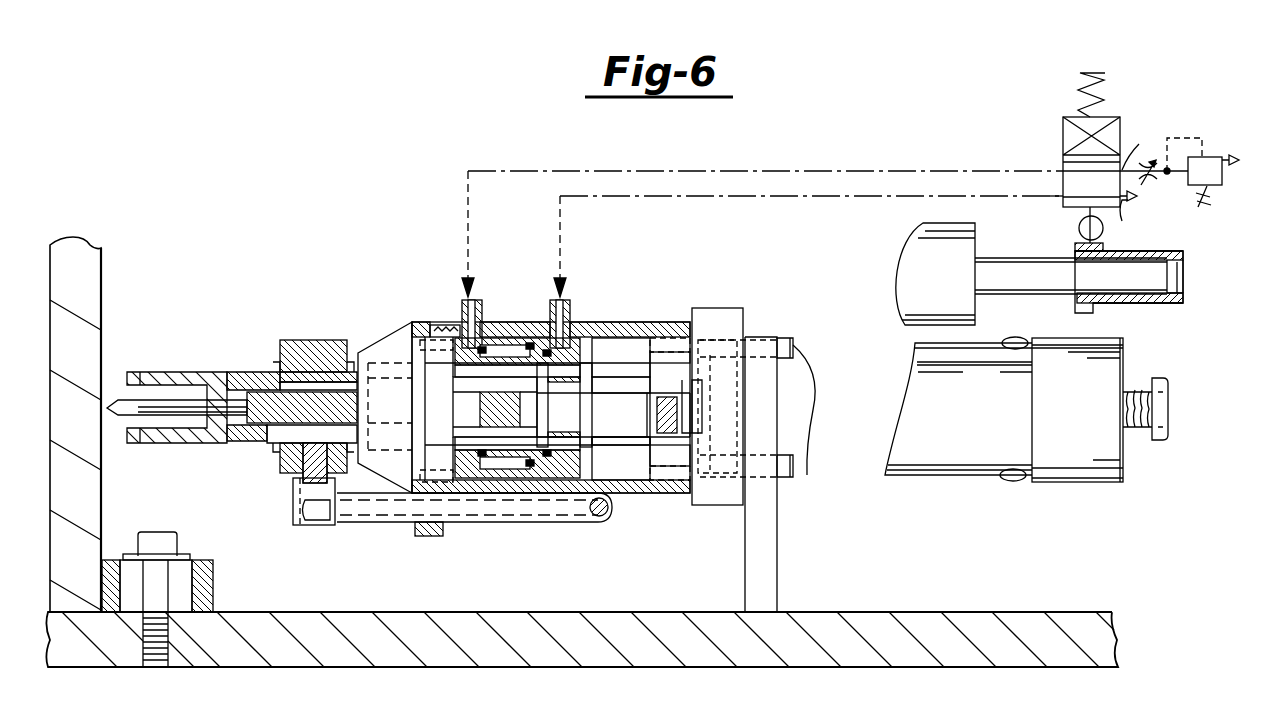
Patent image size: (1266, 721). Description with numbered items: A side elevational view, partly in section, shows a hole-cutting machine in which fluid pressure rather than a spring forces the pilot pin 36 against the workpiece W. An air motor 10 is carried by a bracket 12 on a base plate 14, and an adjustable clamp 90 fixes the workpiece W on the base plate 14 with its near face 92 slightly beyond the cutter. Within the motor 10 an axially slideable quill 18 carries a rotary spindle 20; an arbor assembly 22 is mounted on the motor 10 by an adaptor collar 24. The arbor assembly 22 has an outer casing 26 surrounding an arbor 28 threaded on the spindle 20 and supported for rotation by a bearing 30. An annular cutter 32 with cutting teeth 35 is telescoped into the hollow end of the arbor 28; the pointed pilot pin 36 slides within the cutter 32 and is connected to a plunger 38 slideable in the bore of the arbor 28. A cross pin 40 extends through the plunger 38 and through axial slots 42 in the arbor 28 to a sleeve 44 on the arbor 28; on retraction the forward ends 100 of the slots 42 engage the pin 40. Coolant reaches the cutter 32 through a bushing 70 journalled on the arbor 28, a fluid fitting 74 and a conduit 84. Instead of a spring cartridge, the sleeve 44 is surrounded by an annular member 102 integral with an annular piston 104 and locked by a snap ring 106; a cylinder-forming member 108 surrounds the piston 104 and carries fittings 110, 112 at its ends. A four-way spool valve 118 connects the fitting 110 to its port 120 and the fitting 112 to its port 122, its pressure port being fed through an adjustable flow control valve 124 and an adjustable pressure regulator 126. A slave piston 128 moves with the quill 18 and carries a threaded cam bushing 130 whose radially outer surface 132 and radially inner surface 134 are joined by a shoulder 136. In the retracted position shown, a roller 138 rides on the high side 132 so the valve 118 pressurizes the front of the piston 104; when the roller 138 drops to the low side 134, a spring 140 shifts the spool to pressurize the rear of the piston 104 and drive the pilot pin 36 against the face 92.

The motor 10 is at (959, 478).
The bracket 12 is at (778, 572).
The base plate 14 is at (905, 620).
The quill 18 is at (790, 373).
The rotary spindle 20 is at (673, 480).
The arbor assembly 22 is at (636, 316).
The adaptor collar 24 is at (745, 318).
The outer casing 26 is at (636, 478).
The arbor 28 is at (233, 383).
The bearing 30 is at (377, 355).
The annular cutter 32 is at (153, 383).
The cutting teeth 35 is at (135, 383).
The pilot pin 36 is at (172, 405).
The plunger 38 is at (552, 462).
The cross pin 40 is at (565, 345).
The slots 42 is at (640, 337).
The sleeve 44 is at (600, 330).
The bushing 70 is at (305, 342).
The fluid fitting 74 is at (300, 526).
The conduit 84 is at (360, 522).
The adjustable clamp 90 is at (200, 578).
The near face 92 is at (103, 292).
The workpiece W is at (96, 271).
The forward ends of slots 100 is at (517, 323).
The annular member 102 is at (575, 445).
The annular piston 104 is at (532, 317).
The snap ring 106 is at (442, 323).
The cylinder-forming member 108 is at (520, 478).
The fitting 110 is at (487, 310).
The fitting 112 is at (592, 330).
The four-way valve 118 is at (1121, 126).
The port 120 is at (1063, 171).
The port 122 is at (1063, 197).
The adjustable flow control valve 124 is at (1143, 183).
The adjustable pressure regulator 126 is at (1210, 152).
The slave piston 128 is at (998, 298).
The cam bushing 130 is at (1170, 306).
The radially outer surface 132 is at (1129, 282).
The radially inner surface 134 is at (1170, 248).
The shoulder 136 is at (1103, 244).
The roller 138 is at (1079, 232).
The spring 140 is at (1100, 80).